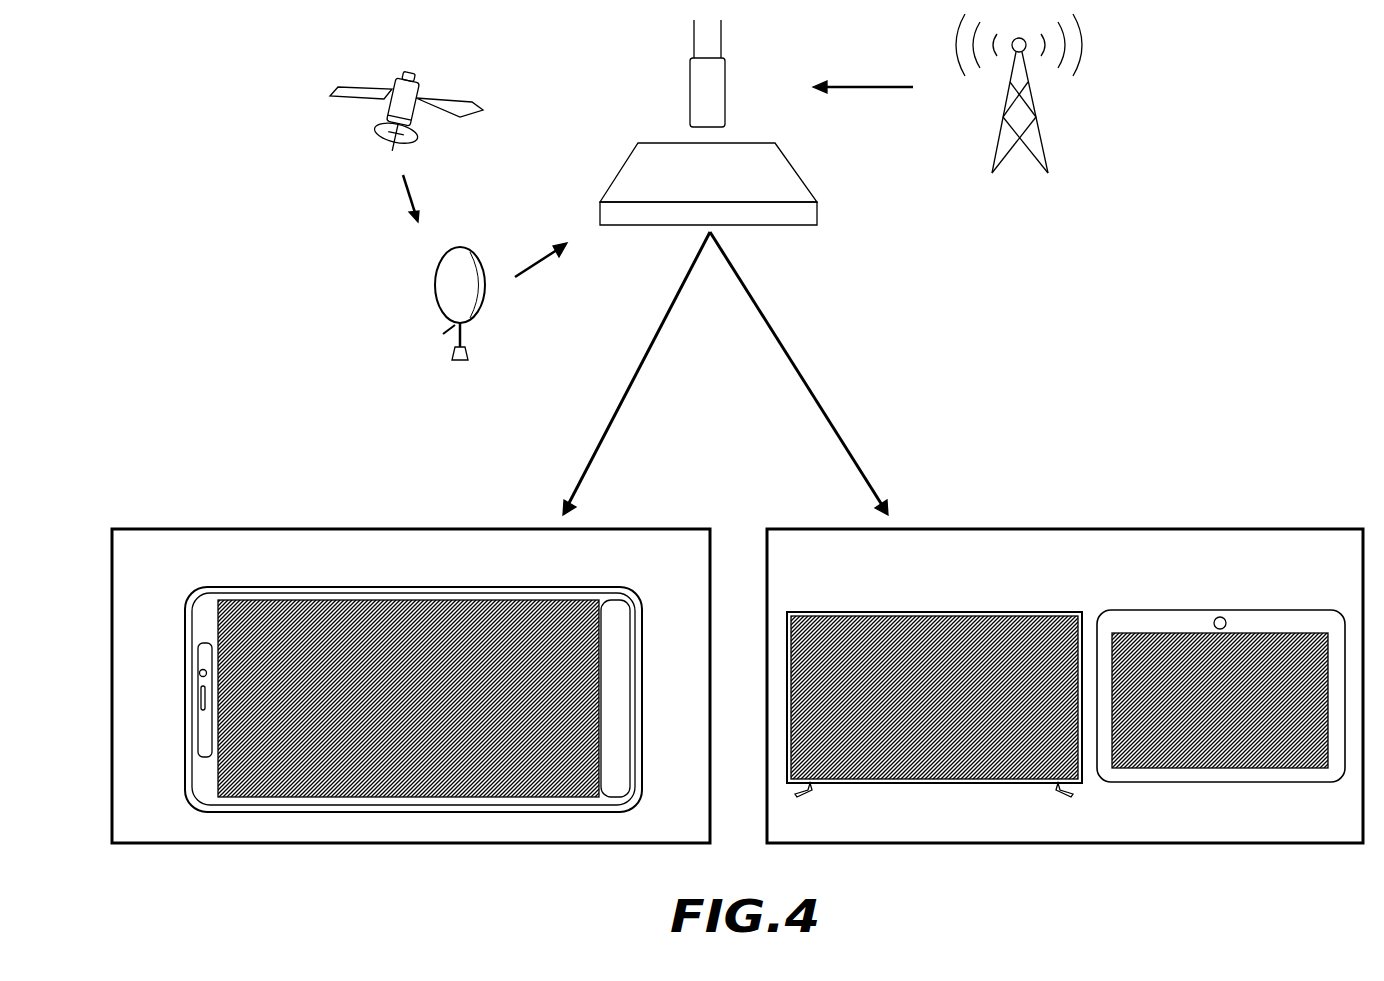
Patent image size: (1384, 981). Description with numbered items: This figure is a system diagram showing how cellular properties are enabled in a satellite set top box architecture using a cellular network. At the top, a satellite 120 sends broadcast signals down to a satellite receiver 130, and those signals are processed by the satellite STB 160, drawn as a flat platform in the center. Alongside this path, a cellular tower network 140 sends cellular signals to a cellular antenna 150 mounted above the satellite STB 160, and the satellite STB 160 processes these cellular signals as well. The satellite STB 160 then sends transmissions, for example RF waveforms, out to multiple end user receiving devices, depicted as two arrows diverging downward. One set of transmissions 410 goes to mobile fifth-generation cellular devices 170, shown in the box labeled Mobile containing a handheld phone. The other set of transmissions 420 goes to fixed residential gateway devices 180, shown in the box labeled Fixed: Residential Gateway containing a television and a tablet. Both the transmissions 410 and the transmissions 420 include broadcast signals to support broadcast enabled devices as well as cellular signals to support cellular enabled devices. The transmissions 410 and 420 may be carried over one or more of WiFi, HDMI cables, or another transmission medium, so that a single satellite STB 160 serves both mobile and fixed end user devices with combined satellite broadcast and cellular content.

The satellite 120 is at (417, 84).
The satellite receiver 130 is at (462, 260).
The cellular tower network 140 is at (1075, 143).
The cellular antenna 150 is at (720, 75).
The satellite STB 160 is at (793, 220).
The mobile 5G cellular devices 170 is at (162, 529).
The fixed residential gateway devices 180 is at (1062, 529).
The transmissions 410 is at (639, 367).
The transmissions 420 is at (795, 368).